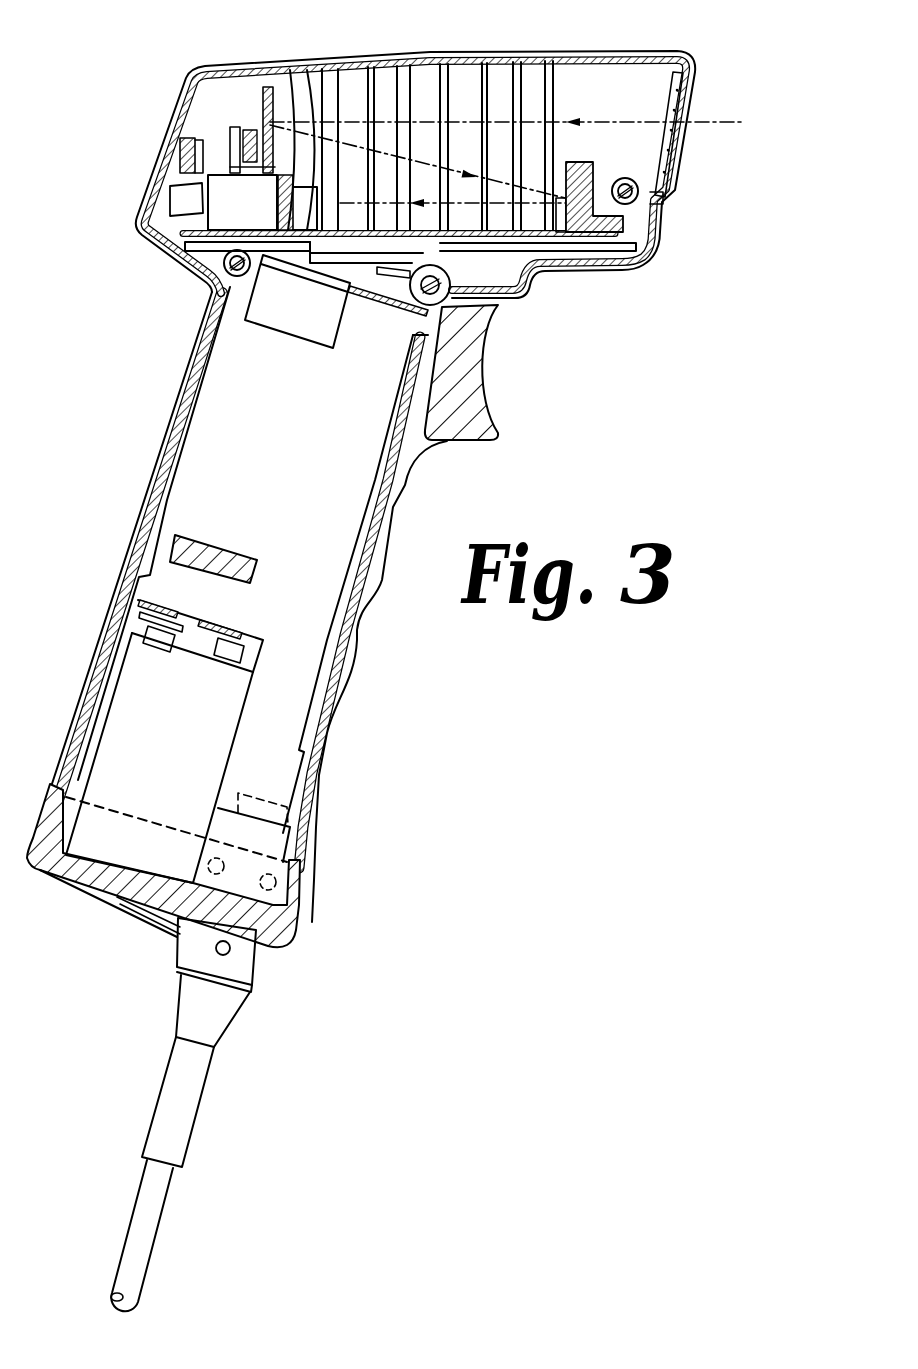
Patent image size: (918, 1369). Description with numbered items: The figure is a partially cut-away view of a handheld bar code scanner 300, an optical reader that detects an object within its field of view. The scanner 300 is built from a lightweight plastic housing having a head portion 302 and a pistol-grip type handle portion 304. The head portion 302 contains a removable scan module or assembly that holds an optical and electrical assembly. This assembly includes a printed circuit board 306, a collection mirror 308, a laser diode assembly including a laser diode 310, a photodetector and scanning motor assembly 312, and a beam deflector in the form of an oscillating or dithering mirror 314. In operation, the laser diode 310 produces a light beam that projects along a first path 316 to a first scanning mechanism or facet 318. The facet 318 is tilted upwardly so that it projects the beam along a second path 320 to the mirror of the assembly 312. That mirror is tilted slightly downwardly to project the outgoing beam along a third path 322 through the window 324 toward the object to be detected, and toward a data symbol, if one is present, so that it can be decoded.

The bar code scanner 300 is at (99, 63).
The head portion 302 is at (697, 55).
The handle portion 304 is at (103, 628).
The printed circuit board 306 is at (185, 252).
The collection mirror 308 is at (589, 162).
The laser diode 310 is at (318, 95).
The photodetector and scanning motor assembly 312 is at (289, 122).
The oscillating or dithering mirror 314 is at (268, 88).
The first path 316 is at (503, 245).
The first scanning mechanism or facet 318 is at (577, 200).
The second path 320 is at (394, 68).
The third path 322 is at (433, 64).
The window 324 is at (675, 145).